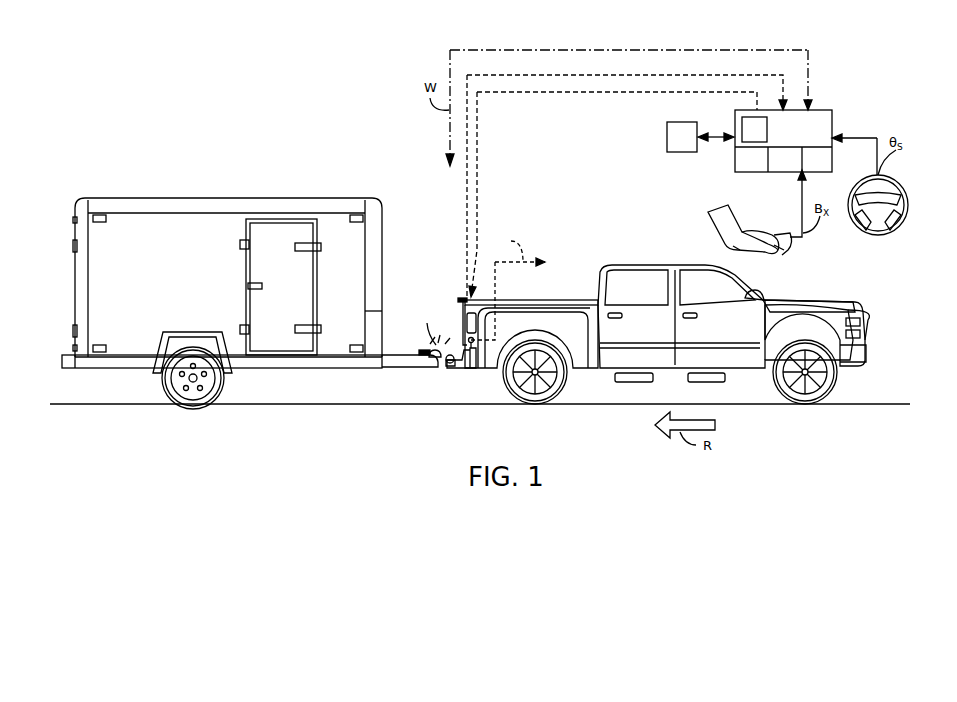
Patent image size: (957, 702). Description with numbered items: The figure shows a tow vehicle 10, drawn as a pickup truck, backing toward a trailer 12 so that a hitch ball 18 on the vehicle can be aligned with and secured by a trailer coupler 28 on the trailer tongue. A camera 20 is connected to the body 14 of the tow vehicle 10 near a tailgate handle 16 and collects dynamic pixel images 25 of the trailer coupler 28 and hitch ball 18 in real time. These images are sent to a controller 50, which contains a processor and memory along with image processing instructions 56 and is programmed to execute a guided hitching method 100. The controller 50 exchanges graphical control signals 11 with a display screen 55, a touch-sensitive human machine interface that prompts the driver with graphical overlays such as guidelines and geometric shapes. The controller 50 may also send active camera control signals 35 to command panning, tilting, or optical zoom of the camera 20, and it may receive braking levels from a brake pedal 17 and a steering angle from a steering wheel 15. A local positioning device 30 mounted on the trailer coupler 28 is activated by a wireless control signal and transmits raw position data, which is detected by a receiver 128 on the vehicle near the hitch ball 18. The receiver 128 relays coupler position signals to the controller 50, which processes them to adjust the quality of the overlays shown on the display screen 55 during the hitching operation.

The tow vehicle 10 is at (822, 66).
The graphical control signals 11 is at (716, 125).
The trailer 12 is at (289, 181).
The body 14 is at (581, 305).
The steering wheel 15 is at (876, 236).
The tailgate handle 16 is at (445, 290).
The brake pedal 17 is at (784, 254).
The hitch ball 18 is at (450, 354).
The camera 20 is at (460, 300).
The dynamic pixel images 25 is at (641, 75).
The trailer coupler 28 is at (436, 367).
The local positioning device 30 is at (421, 342).
The active camera control signals 35 is at (611, 93).
The controller 50 is at (833, 125).
The display screen 55 is at (682, 137).
The image processing instructions 56 is at (754, 129).
The method 100 is at (750, 161).
The receiver 128 is at (468, 370).